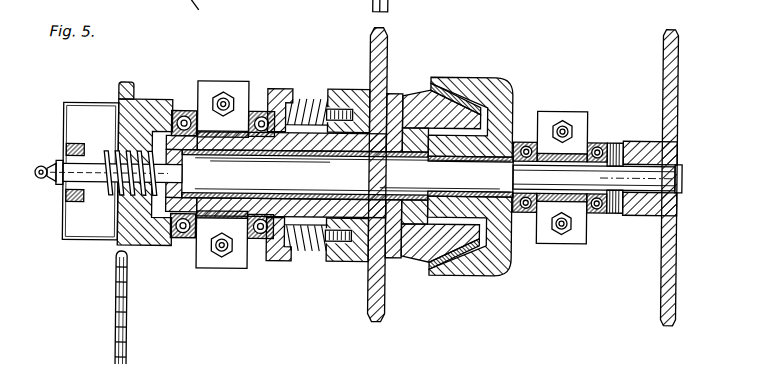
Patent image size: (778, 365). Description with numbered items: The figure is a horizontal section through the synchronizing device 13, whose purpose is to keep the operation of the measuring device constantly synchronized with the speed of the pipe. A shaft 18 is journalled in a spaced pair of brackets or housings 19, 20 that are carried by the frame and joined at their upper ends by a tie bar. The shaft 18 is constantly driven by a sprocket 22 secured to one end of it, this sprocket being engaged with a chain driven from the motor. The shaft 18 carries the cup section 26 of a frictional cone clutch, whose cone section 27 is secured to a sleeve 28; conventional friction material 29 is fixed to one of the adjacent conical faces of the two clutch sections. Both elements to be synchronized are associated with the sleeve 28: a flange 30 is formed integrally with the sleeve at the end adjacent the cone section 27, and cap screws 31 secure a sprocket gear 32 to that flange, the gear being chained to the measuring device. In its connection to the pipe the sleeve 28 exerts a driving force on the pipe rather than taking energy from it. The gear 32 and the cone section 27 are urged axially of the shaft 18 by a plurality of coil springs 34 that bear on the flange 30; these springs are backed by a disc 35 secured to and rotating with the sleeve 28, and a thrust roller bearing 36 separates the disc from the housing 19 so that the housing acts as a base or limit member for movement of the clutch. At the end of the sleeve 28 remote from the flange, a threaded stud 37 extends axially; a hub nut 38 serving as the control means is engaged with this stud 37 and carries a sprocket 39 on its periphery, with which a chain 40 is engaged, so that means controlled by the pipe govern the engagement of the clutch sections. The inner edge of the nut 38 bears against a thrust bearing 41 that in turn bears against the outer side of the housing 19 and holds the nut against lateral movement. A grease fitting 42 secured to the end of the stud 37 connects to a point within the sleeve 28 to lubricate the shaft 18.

The clutch unit 13 is at (405, 183).
The shaft 18 is at (490, 170).
The housing 19 is at (244, 268).
The housing 20 is at (580, 128).
The sprocket 22 is at (678, 63).
The cup section 26 is at (473, 75).
The cone section 27 is at (407, 93).
The sleeve 28 is at (199, 108).
The friction material 29 is at (428, 266).
The flange 30 is at (335, 260).
The cap screws 31 is at (345, 106).
The sprocket gear 32 is at (387, 38).
The coil springs 34 is at (306, 98).
The disc 35 is at (280, 89).
The thrust roller bearing 36 is at (258, 110).
The threaded stud 37 is at (110, 196).
The hub nut 38 is at (132, 246).
The sprocket 39 is at (127, 86).
The chain 40 is at (129, 331).
The thrust bearing 41 is at (185, 238).
The grease fitting 42 is at (43, 181).